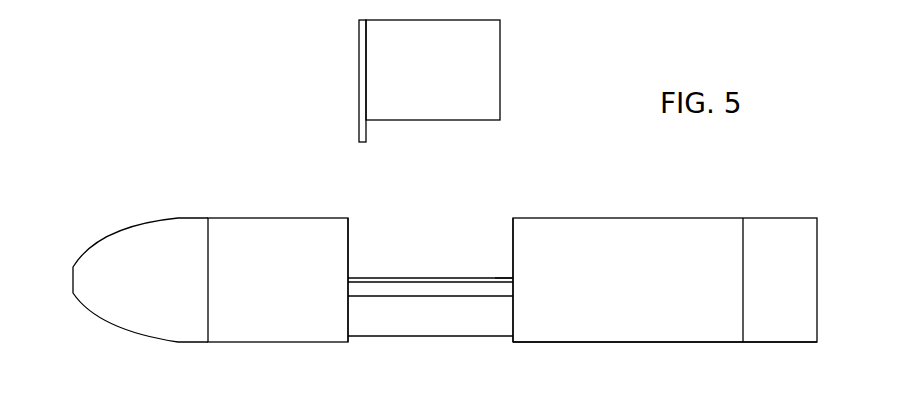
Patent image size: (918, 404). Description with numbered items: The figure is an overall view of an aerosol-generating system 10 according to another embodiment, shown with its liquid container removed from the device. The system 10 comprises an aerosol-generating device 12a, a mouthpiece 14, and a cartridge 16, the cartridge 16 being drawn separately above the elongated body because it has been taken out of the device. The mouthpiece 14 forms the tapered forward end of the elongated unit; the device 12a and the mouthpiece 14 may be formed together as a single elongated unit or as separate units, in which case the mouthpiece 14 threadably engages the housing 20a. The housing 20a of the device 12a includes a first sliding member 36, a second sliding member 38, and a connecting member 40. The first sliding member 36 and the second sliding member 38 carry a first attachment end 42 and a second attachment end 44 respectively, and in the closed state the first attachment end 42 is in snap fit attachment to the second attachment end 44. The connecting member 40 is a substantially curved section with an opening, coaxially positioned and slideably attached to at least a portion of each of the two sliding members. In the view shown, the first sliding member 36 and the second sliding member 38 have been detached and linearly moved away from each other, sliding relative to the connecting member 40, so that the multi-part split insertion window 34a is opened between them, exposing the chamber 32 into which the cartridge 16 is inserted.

The aerosol-generating system 10 is at (189, 187).
The aerosol-generating device 12a is at (677, 352).
The mouthpiece 14 is at (120, 237).
The cartridge 16 is at (357, 62).
The housing 20a is at (617, 216).
The chamber 32 is at (416, 282).
The insertion window 34a is at (471, 276).
The first sliding member 36 is at (269, 218).
The second sliding member 38 is at (693, 218).
The connecting member 40 is at (503, 280).
The first attachment end 42 is at (350, 222).
The second attachment end 44 is at (512, 221).